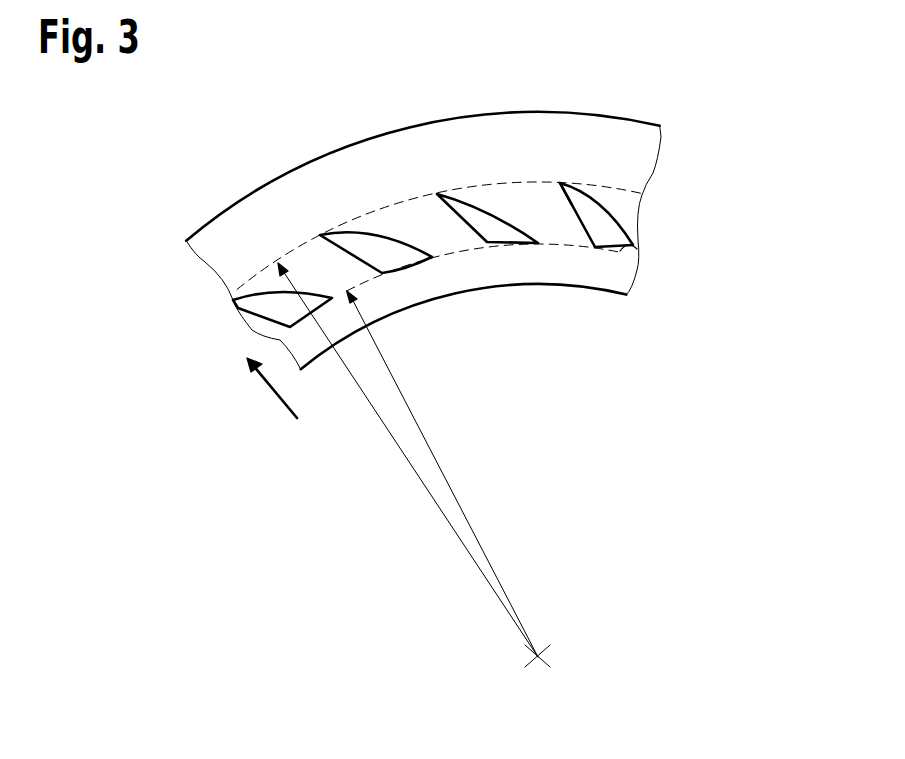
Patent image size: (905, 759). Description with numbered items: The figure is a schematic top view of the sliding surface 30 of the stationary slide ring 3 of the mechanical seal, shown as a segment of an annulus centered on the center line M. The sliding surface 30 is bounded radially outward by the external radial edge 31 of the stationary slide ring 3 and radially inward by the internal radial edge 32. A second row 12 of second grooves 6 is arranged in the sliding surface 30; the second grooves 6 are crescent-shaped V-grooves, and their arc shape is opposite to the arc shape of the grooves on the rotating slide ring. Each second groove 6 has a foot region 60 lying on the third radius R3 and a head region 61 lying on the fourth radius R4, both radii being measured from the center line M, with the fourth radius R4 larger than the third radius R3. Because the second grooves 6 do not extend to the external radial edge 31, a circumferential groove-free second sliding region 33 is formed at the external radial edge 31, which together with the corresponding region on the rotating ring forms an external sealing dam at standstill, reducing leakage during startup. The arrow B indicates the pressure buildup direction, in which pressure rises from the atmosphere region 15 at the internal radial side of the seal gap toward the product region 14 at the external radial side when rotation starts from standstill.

The stationary slide ring 3 is at (204, 145).
The product region 14 is at (321, 124).
The atmosphere region 15 is at (649, 421).
The external radial edge of the stationary slide ring 31 is at (418, 118).
The sliding surface of the stationary slide ring 30 is at (473, 172).
The second sliding region of the stationary slide ring 33 is at (585, 135).
The internal radial edge of the stationary slide ring 32 is at (537, 288).
The head region 61 is at (560, 183).
The second row of second grooves 12 is at (648, 218).
The foot region 60 is at (636, 249).
The second grooves 6 is at (283, 298).
The pressure buildup direction B is at (276, 393).
The third radius of foot regions 60 R3 is at (427, 447).
The fourth radius R4 is at (404, 463).
The center line M is at (541, 657).